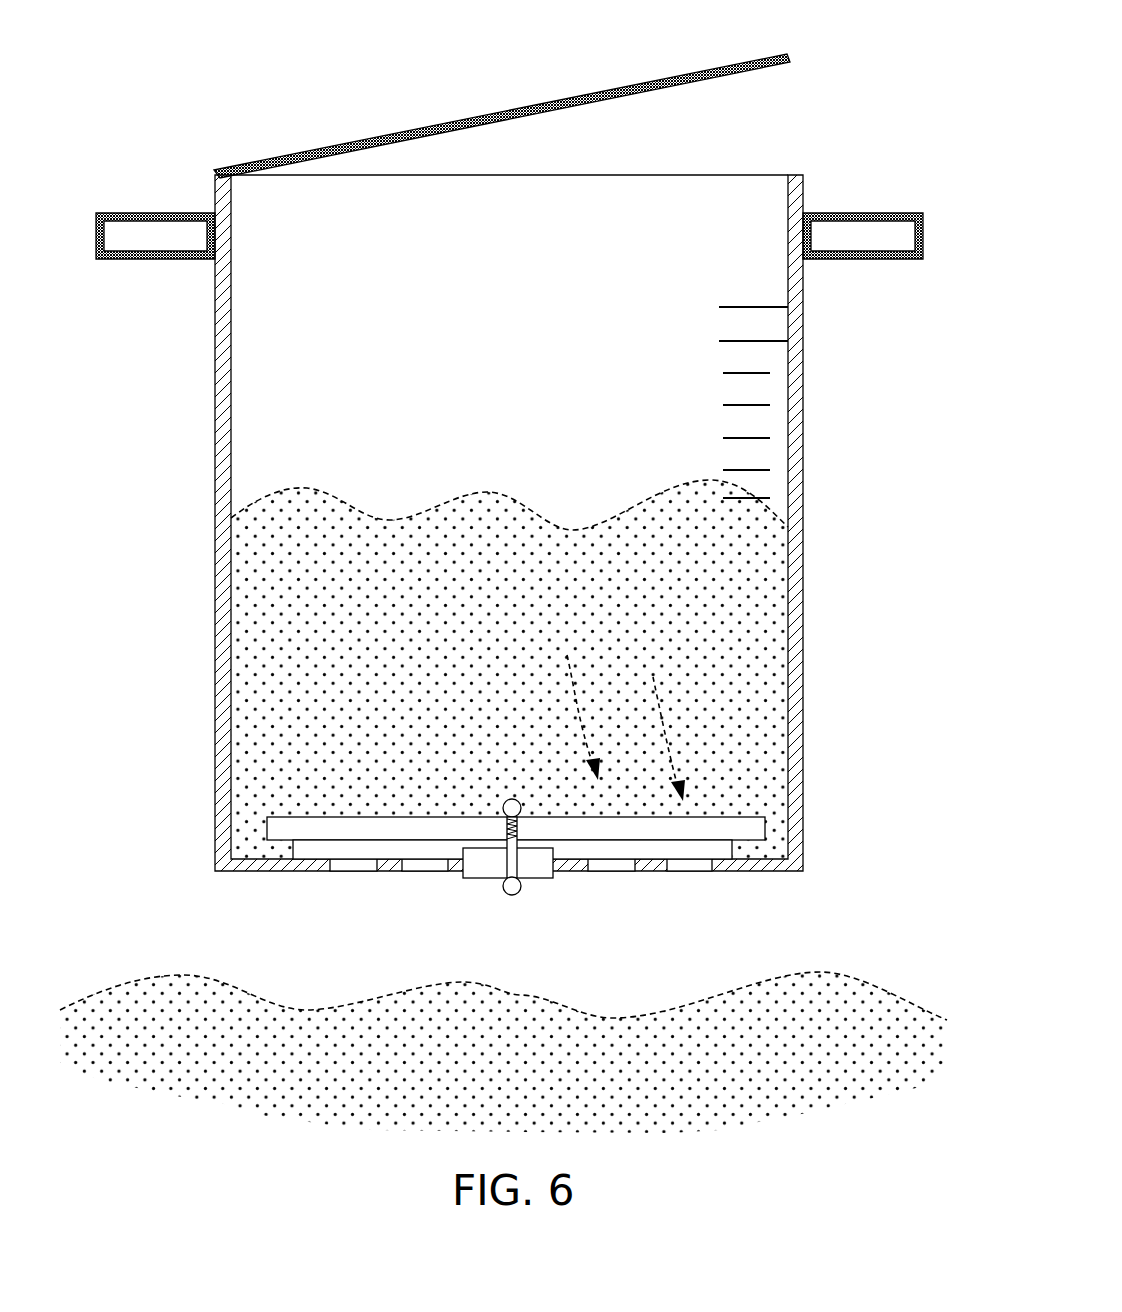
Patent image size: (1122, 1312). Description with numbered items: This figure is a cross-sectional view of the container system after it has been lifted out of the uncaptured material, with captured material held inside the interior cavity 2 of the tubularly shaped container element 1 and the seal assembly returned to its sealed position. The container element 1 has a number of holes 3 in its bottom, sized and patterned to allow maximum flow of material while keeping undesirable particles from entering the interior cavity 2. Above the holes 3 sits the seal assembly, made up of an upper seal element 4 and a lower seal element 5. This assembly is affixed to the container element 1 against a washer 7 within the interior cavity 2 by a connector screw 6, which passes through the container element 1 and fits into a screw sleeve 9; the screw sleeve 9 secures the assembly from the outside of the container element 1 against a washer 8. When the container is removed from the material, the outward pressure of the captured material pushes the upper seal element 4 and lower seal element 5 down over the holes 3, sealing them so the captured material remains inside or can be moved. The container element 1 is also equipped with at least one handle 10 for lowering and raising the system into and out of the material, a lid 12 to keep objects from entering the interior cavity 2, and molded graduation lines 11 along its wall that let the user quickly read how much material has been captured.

The container element 1 is at (205, 339).
The interior cavity 2 is at (708, 200).
The holes 3 is at (405, 880).
The upper seal element 4 is at (258, 826).
The lower seal element 5 is at (285, 849).
The connector screw 6 is at (517, 793).
The washer 7 is at (541, 868).
The washer 8 is at (455, 885).
The screw sleeve 9 is at (498, 895).
The handle 10 is at (84, 202).
The graduation lines 11 is at (778, 311).
The lid 12 is at (452, 112).